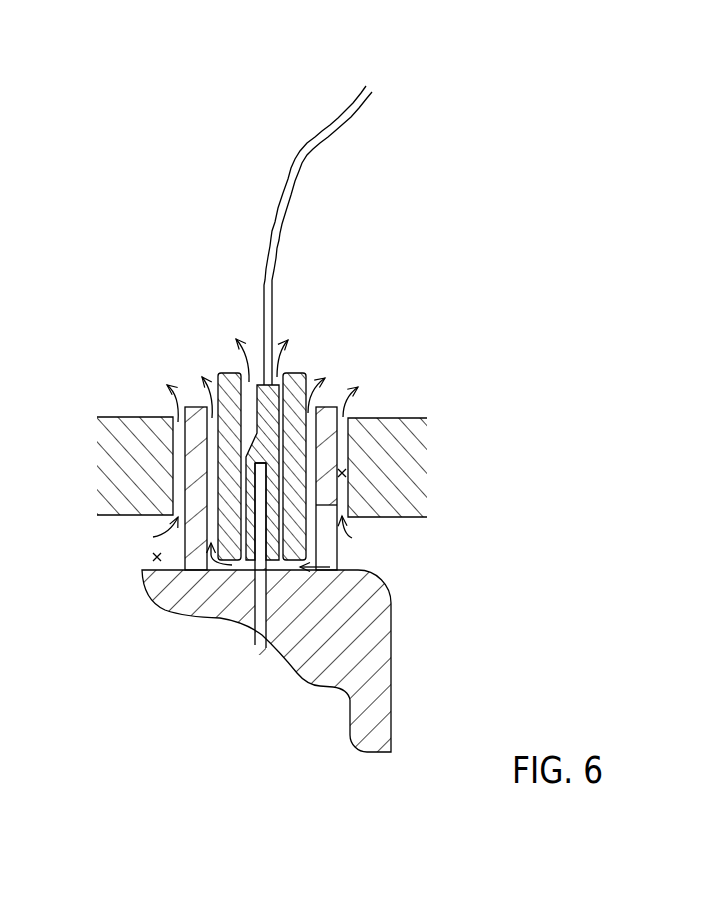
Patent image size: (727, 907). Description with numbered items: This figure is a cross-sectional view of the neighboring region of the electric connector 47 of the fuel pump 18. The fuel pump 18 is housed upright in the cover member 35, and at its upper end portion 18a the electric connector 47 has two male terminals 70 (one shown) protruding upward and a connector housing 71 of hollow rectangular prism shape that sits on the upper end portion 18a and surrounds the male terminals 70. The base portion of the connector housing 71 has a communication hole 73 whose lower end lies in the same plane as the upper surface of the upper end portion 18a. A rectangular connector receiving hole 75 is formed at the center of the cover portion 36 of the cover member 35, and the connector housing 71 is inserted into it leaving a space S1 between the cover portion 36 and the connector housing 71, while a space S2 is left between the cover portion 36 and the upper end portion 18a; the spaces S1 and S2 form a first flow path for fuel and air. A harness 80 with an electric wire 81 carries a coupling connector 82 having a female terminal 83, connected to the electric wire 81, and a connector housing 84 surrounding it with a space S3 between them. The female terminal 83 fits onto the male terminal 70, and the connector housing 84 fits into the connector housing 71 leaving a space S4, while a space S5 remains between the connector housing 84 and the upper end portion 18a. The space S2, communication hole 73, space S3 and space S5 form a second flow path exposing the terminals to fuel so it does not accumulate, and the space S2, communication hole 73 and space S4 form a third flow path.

The fuel pump 18 is at (303, 662).
The upper end portion 18a is at (360, 665).
The cover member 35 is at (407, 416).
The cover portion 36 is at (285, 433).
The electric connector 47 is at (193, 398).
The male terminal 70 is at (258, 607).
The connector housing 71 is at (150, 459).
The communication hole 73 is at (325, 545).
The connector receiving hole 75 is at (343, 450).
The harness 80 is at (295, 155).
The electric wire 81 is at (278, 223).
The coupling connector 82 is at (295, 368).
The female terminal 83 is at (257, 398).
The connector housing 84 is at (298, 393).
The space S1 is at (342, 473).
The space S2 is at (157, 557).
The space S3 is at (246, 448).
The space S4 is at (212, 478).
The space S5 is at (197, 575).